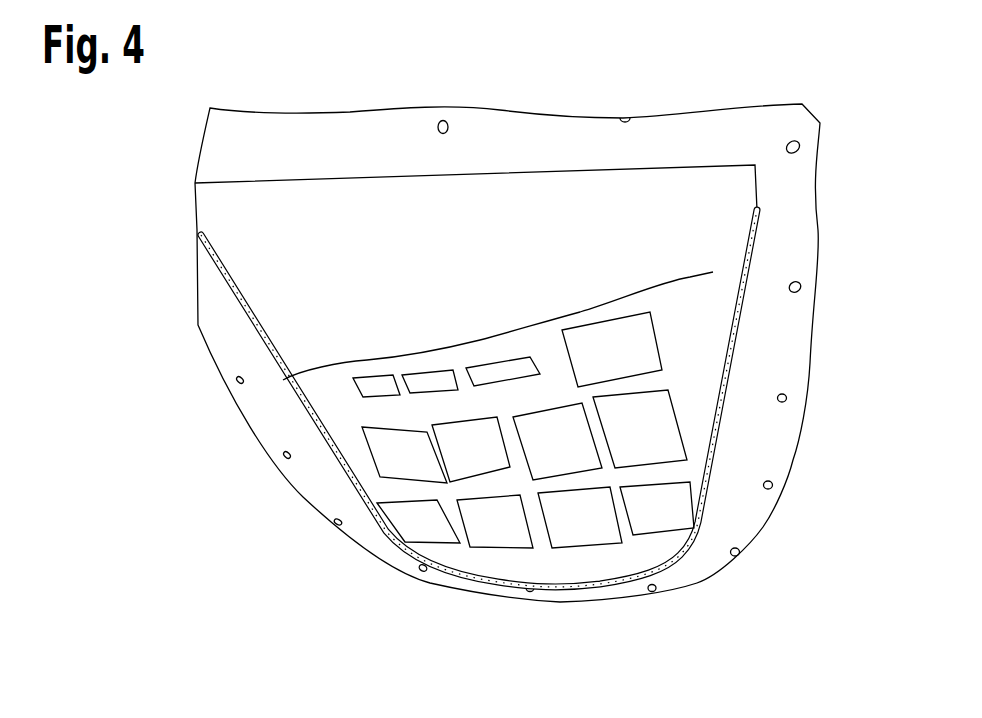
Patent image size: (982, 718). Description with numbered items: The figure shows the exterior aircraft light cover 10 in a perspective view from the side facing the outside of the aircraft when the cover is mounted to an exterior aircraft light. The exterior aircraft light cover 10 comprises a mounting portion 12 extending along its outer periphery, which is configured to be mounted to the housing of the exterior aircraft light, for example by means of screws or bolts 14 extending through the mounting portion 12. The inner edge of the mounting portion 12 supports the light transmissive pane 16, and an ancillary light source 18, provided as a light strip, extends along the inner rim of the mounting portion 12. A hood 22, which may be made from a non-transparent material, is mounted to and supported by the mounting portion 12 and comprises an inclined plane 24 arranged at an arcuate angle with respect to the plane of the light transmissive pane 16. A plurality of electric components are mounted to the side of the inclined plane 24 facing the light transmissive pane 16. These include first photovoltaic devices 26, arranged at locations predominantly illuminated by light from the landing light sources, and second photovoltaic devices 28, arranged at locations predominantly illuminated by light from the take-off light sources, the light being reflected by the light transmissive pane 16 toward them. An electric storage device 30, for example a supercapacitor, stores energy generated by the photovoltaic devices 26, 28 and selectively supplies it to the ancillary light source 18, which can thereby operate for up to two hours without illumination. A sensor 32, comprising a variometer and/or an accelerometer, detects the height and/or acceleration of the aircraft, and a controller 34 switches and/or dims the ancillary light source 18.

The exterior aircraft light cover 10 is at (330, 559).
The mounting portion 12 is at (738, 527).
The screws or bolts 14 is at (801, 290).
The light transmissive pane 16 is at (516, 233).
The ancillary light source 18 is at (753, 253).
The hood 22 is at (717, 266).
The inclined plane 24 is at (693, 312).
The first photovoltaic device 26 is at (367, 453).
The second photovoltaic device 28 is at (548, 408).
The electric storage device 30 is at (372, 376).
The sensor 32 is at (495, 357).
The controller 34 is at (618, 313).